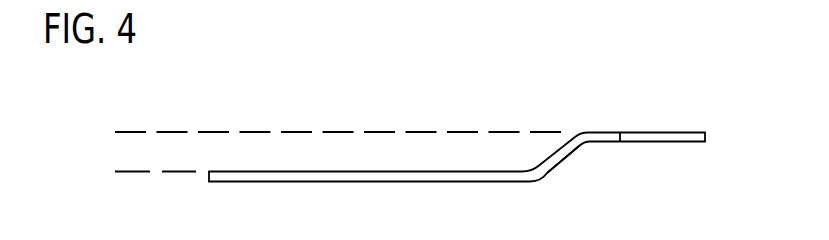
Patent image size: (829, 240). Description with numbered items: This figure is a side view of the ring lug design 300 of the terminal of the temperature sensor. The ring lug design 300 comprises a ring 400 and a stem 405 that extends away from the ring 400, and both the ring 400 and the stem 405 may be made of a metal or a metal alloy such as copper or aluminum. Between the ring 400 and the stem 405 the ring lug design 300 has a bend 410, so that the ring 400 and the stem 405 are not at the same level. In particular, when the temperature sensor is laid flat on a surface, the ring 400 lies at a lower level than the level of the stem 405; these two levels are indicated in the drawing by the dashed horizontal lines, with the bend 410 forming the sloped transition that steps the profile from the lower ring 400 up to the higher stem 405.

The ring lug design 300 is at (440, 90).
The ring 400 is at (435, 183).
The stem 405 is at (667, 132).
The bend 410 is at (564, 170).